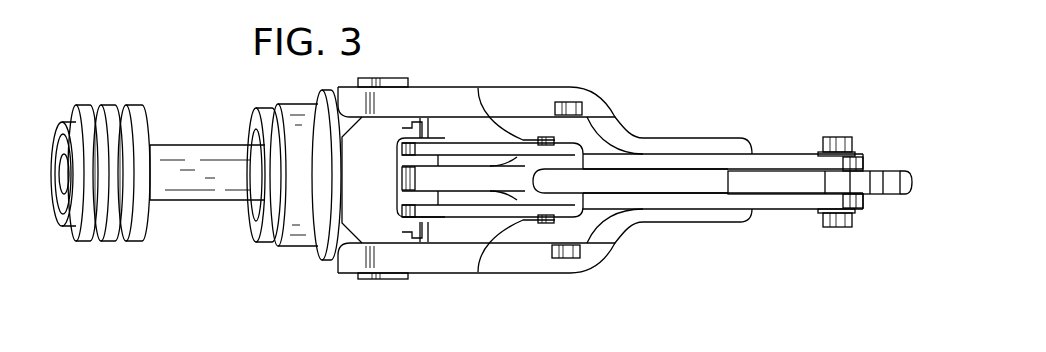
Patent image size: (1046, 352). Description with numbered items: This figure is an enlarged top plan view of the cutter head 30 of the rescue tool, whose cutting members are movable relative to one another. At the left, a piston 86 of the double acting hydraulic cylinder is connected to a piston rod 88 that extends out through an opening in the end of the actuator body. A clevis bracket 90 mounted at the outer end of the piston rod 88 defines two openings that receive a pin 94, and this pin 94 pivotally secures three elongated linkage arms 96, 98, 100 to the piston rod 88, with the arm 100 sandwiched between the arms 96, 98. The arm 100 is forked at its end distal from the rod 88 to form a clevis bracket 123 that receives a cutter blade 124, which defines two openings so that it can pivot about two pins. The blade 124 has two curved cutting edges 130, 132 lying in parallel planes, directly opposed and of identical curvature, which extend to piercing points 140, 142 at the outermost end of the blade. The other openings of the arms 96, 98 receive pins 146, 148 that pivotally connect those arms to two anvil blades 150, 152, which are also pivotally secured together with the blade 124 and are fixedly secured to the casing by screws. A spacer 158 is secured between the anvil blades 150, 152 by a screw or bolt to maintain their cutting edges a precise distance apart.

The cutter head 30 is at (689, 128).
The piston 86 is at (84, 105).
The piston rod 88 is at (214, 150).
The clevis bracket 90 is at (430, 158).
The pin 94 is at (433, 222).
The linkage arm 96 is at (490, 217).
The linkage arm 98 is at (473, 143).
The linkage arm 100 is at (480, 177).
The clevis bracket 123 is at (498, 215).
The cutter blade 124 is at (914, 194).
The curved cutting edge 130 is at (898, 195).
The curved cutting edge 132 is at (889, 171).
The piercing point 140 is at (718, 186).
The piercing point 142 is at (726, 177).
The pin 146 is at (563, 258).
The pin 148 is at (566, 102).
The anvil blade 150 is at (778, 209).
The anvil blade 152 is at (780, 154).
The spacer 158 is at (835, 137).